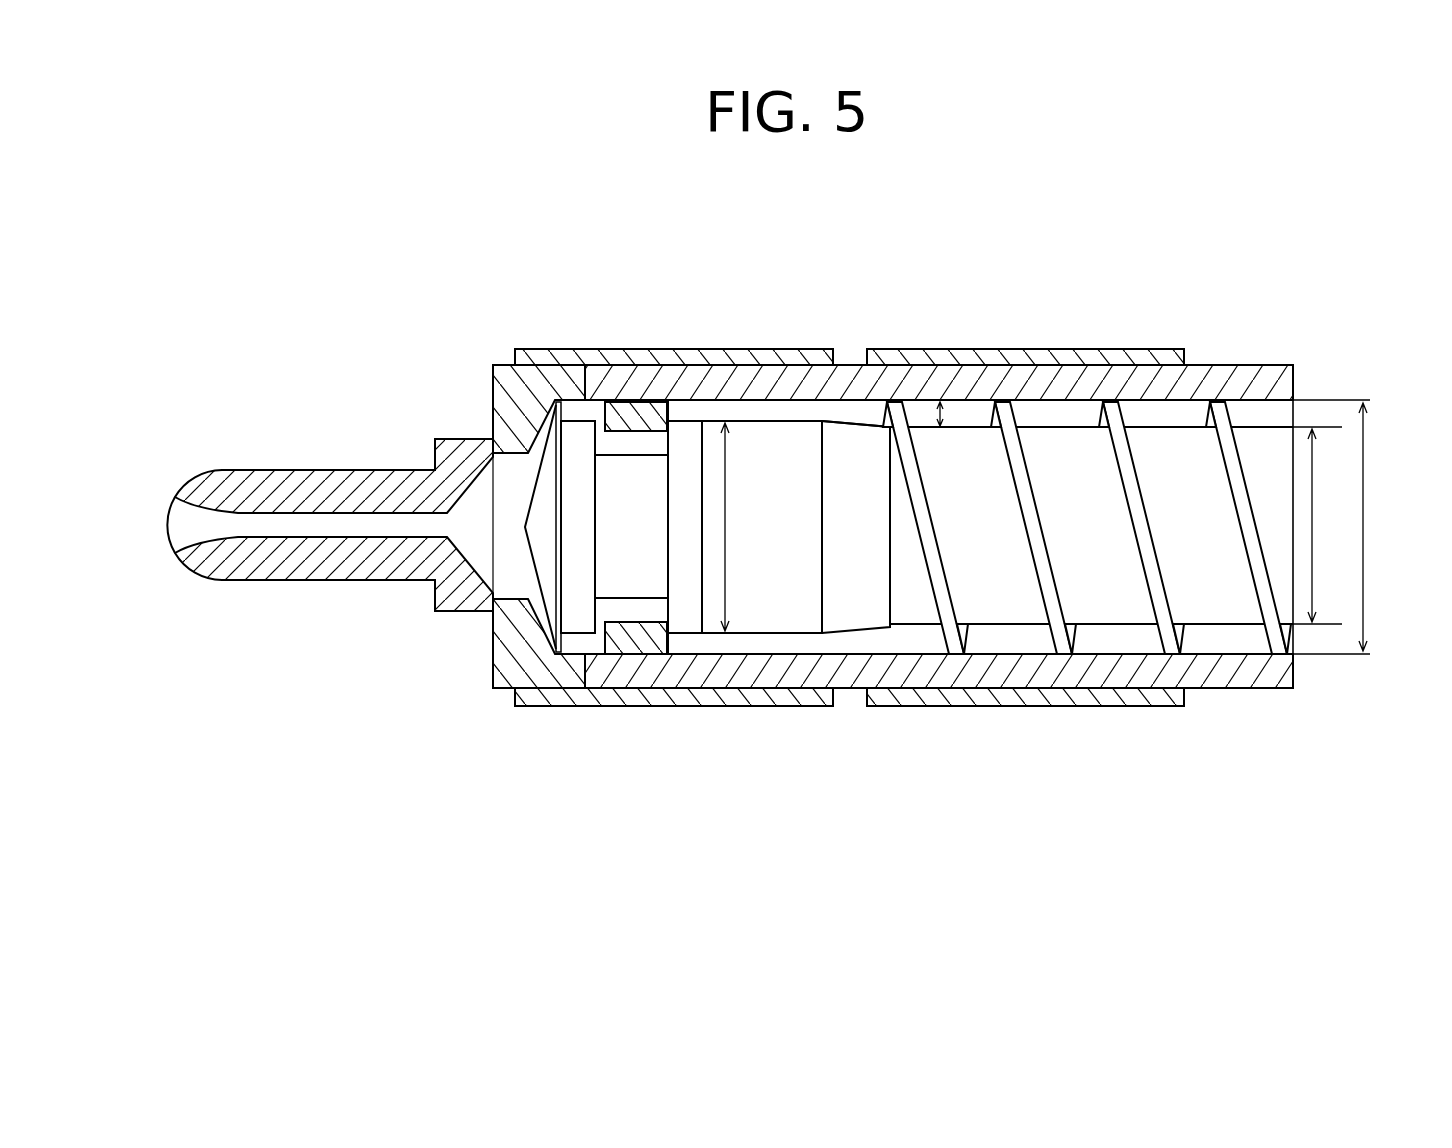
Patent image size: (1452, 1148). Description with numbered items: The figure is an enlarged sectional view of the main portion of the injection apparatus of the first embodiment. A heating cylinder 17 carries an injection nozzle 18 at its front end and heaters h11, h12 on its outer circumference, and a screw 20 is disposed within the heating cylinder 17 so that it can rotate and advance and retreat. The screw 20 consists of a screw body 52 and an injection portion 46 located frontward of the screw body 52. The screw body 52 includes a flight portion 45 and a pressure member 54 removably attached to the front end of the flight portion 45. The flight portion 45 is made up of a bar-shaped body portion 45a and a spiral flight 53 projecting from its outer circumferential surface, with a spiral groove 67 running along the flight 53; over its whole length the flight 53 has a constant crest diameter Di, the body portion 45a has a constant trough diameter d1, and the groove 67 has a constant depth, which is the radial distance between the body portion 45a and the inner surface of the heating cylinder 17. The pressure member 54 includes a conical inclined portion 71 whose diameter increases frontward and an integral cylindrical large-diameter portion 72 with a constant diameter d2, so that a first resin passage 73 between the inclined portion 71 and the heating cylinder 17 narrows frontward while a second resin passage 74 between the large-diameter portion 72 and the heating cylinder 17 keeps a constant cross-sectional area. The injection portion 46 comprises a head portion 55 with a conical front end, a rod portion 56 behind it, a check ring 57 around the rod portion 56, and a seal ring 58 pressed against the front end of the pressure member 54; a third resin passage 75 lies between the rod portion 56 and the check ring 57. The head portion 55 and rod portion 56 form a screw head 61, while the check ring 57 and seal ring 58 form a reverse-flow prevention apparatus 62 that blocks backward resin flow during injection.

The heating cylinder 17 is at (1237, 677).
The injection nozzle 18 is at (263, 470).
The screw 20 is at (1030, 422).
The flight portion 45 is at (1088, 531).
The body portion 45a is at (995, 590).
The injection portion 46 is at (613, 650).
The screw body 52 is at (1036, 575).
The flight 53 is at (1113, 403).
The pressure member 54 is at (796, 606).
The head portion 55 is at (582, 608).
The rod portion 56 is at (632, 585).
The check ring 57 is at (647, 640).
The seal ring 58 is at (690, 617).
The screw head 61 is at (596, 622).
The reverse-flow prevention apparatus 62 is at (653, 621).
The spiral groove 67 is at (1173, 423).
The inclined portion 71 is at (856, 527).
The large-diameter portion 72 is at (796, 492).
The resin passage 73 is at (852, 418).
The resin passage 74 is at (695, 410).
The resin passage 75 is at (635, 437).
The heater h11 is at (718, 364).
The heater h12 is at (957, 364).
The flight trough diameter d1 is at (1322, 525).
The diameter of large-diameter portion d2 is at (744, 527).
The flight crest diameter Di is at (1349, 527).